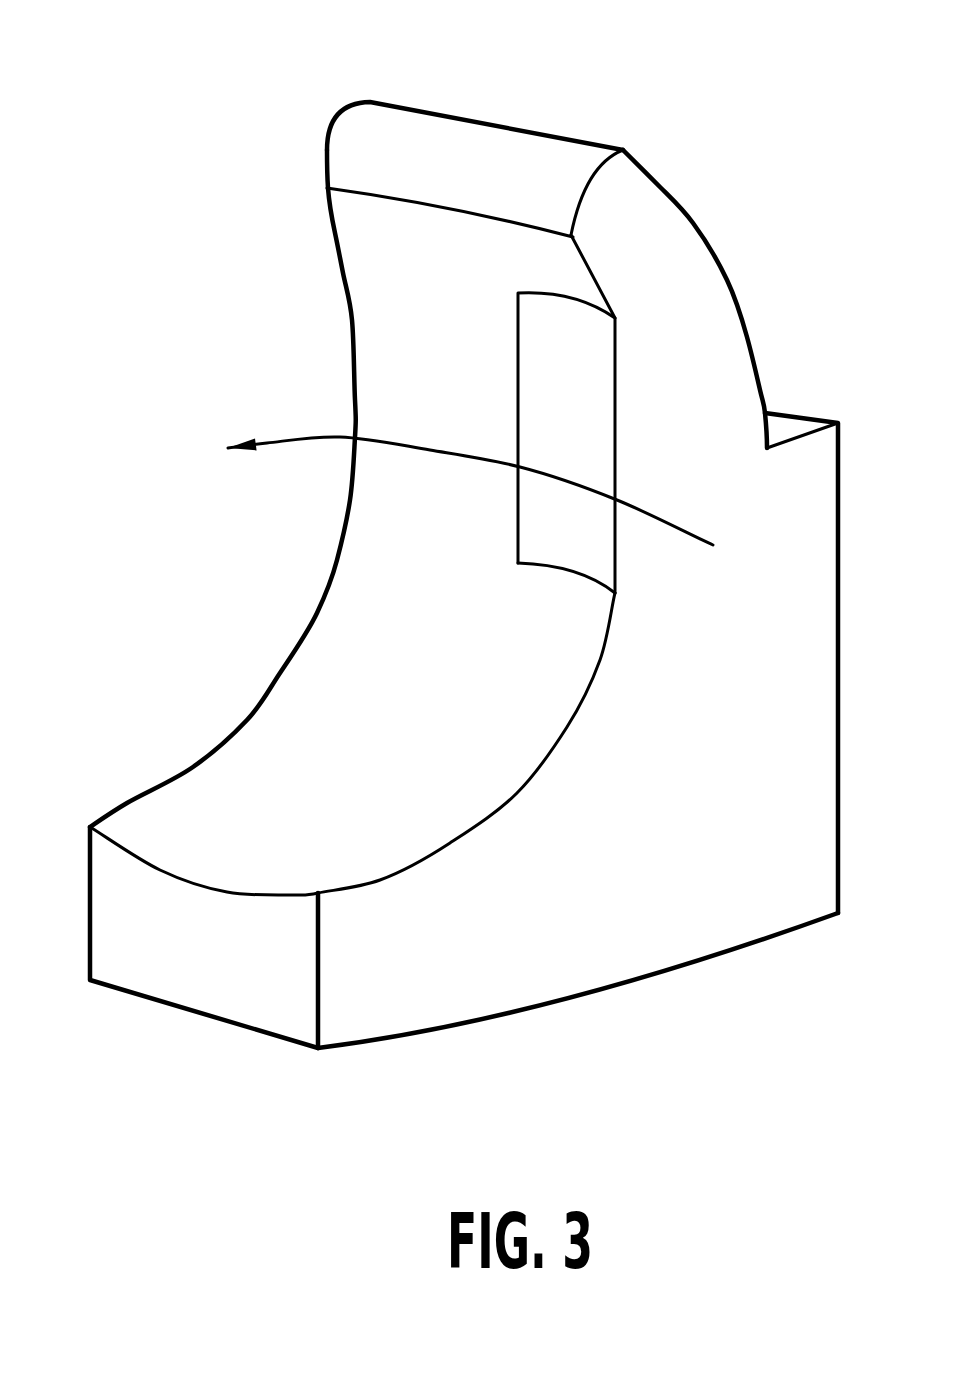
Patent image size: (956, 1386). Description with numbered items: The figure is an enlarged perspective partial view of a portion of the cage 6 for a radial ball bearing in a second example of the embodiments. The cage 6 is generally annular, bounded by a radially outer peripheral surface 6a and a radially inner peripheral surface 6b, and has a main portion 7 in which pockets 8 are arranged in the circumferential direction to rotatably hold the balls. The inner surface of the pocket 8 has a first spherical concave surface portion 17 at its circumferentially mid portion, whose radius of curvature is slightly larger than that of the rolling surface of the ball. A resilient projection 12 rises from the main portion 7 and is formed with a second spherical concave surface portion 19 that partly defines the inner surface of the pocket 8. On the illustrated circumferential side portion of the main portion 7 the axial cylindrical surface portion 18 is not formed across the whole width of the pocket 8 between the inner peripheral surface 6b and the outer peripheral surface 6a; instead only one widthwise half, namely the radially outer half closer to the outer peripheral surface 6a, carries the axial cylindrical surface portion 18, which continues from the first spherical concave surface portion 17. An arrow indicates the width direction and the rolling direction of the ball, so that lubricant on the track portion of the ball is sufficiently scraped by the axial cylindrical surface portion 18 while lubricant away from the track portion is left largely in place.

The cage 6 is at (245, 633).
The outer peripheral surface 6a is at (650, 783).
The inner peripheral surface 6b is at (242, 717).
The main portion 7 is at (682, 930).
The pocket 8 is at (350, 858).
The resilient projection 12 is at (447, 135).
The first spherical concave surface portion 17 is at (208, 788).
The axial cylindrical surface portion 18 is at (585, 408).
The second spherical concave surface portion 19 is at (433, 255).